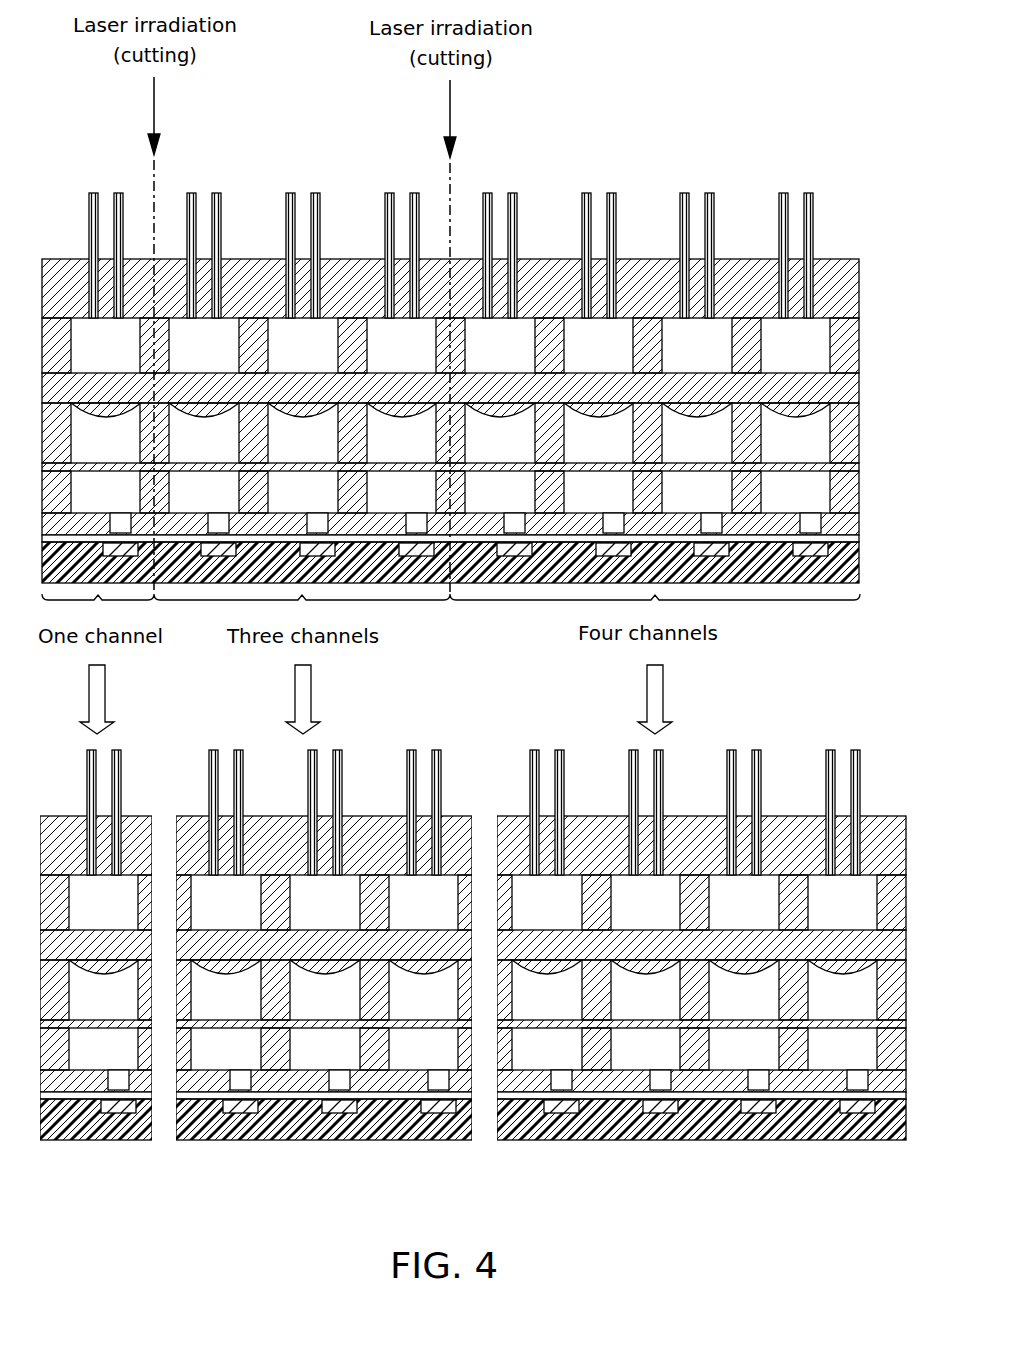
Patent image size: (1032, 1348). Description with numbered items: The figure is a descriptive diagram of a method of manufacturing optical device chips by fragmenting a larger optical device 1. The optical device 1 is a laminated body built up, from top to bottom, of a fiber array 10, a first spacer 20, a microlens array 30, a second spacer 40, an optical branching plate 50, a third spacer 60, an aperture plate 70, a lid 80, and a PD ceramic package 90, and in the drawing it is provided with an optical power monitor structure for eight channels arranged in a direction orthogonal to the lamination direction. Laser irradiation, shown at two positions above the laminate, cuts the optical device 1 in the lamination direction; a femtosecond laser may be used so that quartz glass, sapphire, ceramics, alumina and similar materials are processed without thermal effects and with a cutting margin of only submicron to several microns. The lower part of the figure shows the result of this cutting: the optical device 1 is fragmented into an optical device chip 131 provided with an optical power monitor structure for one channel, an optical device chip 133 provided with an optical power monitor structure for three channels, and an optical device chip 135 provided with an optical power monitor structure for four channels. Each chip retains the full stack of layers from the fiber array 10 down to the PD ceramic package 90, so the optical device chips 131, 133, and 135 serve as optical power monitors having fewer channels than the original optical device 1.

The optical device 1 is at (476, 369).
The fiber array 10 is at (476, 284).
The first spacer 20 is at (476, 339).
The microlens array 30 is at (476, 378).
The second spacer 40 is at (476, 432).
The optical branching plate 50 is at (476, 451).
The third spacer 60 is at (476, 488).
The aperture plate 70 is at (476, 513).
The lid 80 is at (476, 550).
The PD ceramic package 90 is at (476, 570).
The optical device chip 131 is at (40, 1146).
The optical device chip 133 is at (176, 1146).
The optical device chip 135 is at (497, 1146).